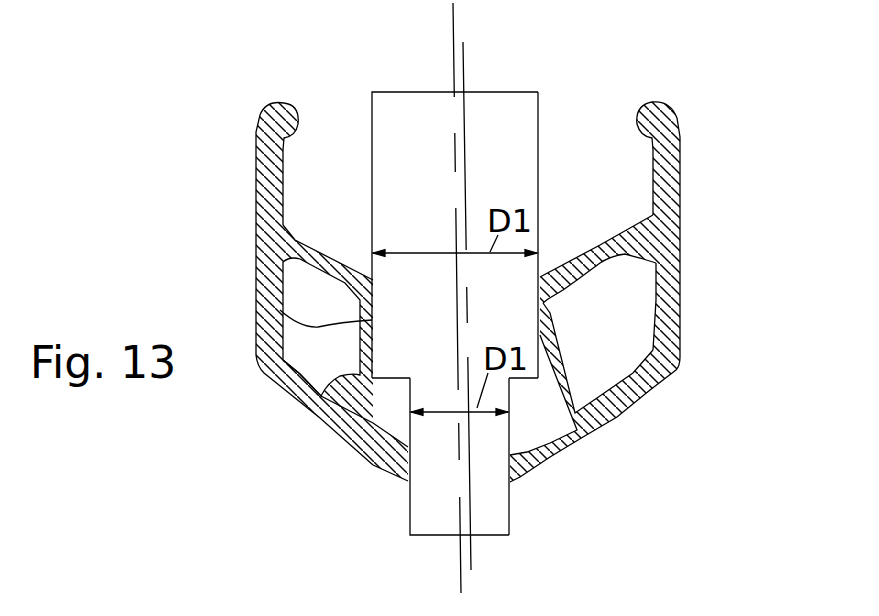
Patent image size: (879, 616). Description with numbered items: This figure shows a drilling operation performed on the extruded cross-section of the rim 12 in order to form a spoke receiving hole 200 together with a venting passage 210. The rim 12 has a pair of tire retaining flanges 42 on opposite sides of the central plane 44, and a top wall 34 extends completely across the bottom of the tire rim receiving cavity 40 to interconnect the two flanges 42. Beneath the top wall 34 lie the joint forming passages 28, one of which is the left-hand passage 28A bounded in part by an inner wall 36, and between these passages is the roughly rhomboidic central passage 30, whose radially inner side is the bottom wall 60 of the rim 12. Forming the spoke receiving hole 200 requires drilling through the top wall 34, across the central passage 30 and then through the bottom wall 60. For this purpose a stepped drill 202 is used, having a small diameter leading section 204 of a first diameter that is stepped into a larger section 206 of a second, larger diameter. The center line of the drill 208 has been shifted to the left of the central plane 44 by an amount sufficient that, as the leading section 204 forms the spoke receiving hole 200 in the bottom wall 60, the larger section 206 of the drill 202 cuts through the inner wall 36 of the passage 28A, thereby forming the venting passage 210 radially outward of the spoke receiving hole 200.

The rim 12 is at (694, 232).
The joint forming passages 28 is at (610, 318).
The joint forming passage 28A is at (328, 365).
The central passage 30 is at (543, 404).
The top wall 34 is at (560, 292).
The inner wall 36 is at (343, 430).
The tire rim receiving cavity 40 is at (364, 196).
The flanges 42 is at (257, 148).
The central plane 44 is at (465, 63).
The bottom wall 60 is at (383, 470).
The spoke receiving hole 200 is at (518, 488).
The stepped drill 202 is at (498, 90).
The small diameter leading section 204 is at (410, 513).
The larger section 206 is at (507, 183).
The center line of the drill 208 is at (457, 190).
The venting passage 210 is at (282, 312).